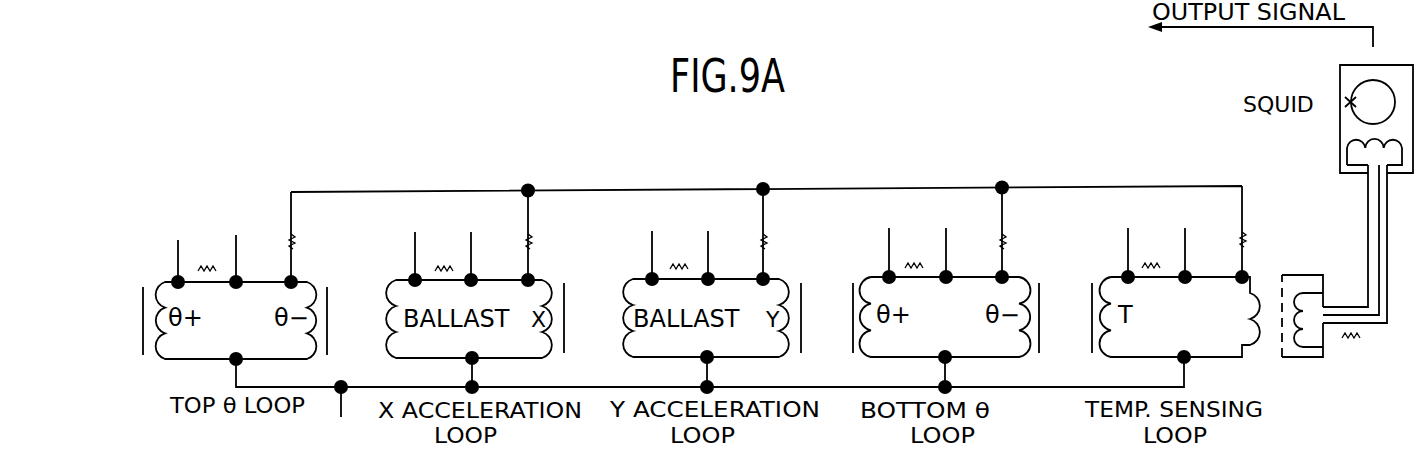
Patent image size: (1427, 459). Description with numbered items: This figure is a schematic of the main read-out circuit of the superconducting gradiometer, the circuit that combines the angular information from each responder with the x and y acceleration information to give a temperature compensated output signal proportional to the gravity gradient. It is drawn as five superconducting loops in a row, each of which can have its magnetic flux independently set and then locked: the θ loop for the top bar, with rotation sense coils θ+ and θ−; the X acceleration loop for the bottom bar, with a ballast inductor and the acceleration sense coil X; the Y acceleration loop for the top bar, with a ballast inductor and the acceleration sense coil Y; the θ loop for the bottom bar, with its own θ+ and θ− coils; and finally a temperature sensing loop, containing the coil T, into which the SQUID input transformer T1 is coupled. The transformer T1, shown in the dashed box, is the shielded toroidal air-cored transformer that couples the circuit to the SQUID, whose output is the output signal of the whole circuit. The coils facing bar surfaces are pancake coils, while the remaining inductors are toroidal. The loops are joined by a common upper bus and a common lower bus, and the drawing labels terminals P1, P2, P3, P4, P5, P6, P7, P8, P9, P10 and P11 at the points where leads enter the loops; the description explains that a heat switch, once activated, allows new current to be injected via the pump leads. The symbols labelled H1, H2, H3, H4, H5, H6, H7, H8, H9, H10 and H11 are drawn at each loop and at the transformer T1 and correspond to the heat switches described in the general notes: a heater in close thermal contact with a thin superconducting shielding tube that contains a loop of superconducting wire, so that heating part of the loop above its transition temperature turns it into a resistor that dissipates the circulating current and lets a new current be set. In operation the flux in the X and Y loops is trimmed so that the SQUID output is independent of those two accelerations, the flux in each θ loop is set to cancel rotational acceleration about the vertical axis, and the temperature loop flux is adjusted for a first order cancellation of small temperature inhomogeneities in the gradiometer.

The contact pad P1 is at (182, 239).
The contact pad P2 is at (242, 239).
The contact pad P3 is at (415, 237).
The contact pad P4 is at (473, 237).
The contact pad P5 is at (655, 237).
The contact pad P6 is at (712, 237).
The contact pad P7 is at (887, 235).
The contact pad P8 is at (950, 235).
The contact pad P9 is at (1128, 235).
The contact pad P10 is at (1186, 235).
The contact pad P11 is at (340, 414).
The heat switch H1 is at (206, 257).
The heat switch H2 is at (315, 239).
The heat switch H3 is at (447, 256).
The heat switch H4 is at (550, 239).
The heat switch H5 is at (682, 255).
The heat switch H6 is at (785, 239).
The heat switch H7 is at (917, 254).
The heat switch H8 is at (1024, 239).
The heat switch H9 is at (1153, 253).
The heat switch H10 is at (1269, 237).
The heat switch H11 is at (1354, 349).
The transformer T1 is at (1287, 356).